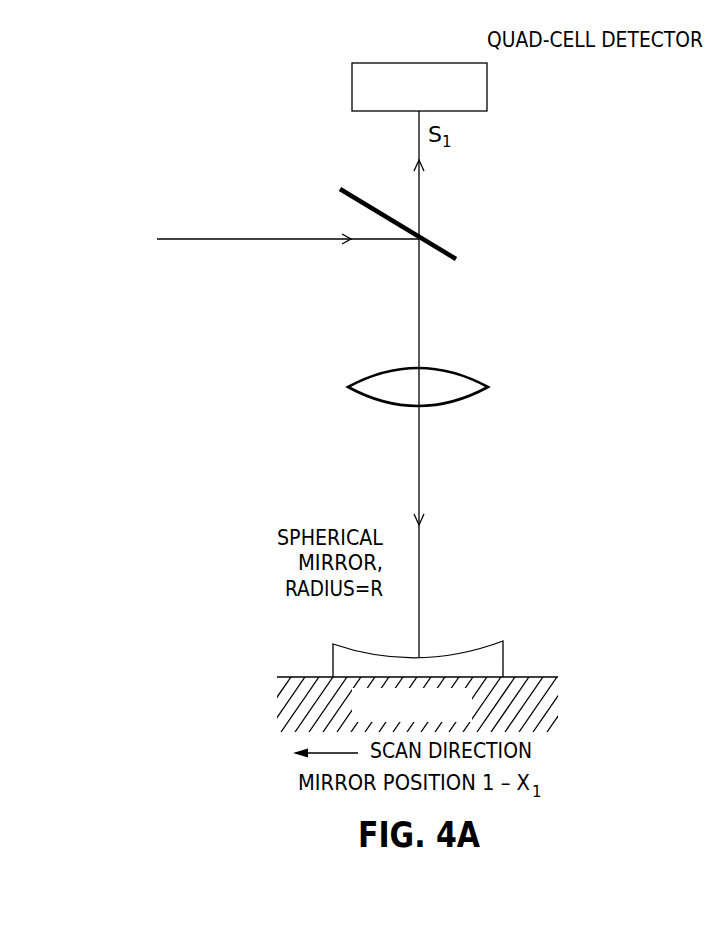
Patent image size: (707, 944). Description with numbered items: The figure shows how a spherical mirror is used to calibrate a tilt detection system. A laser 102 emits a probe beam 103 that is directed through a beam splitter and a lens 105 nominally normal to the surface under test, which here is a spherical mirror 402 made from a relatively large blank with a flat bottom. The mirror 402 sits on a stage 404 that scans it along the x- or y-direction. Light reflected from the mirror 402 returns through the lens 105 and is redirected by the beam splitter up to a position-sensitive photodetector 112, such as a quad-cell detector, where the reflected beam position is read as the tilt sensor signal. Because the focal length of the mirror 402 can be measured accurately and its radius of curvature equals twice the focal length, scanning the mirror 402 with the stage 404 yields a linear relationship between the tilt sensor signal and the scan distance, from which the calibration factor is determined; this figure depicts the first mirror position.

The position-sensitive photodetector 112 is at (395, 62).
The laser 102 is at (288, 226).
The probe beam 103 is at (383, 241).
The lens 105 is at (450, 370).
The spherical mirror 402 is at (387, 653).
The stage 404 is at (465, 716).